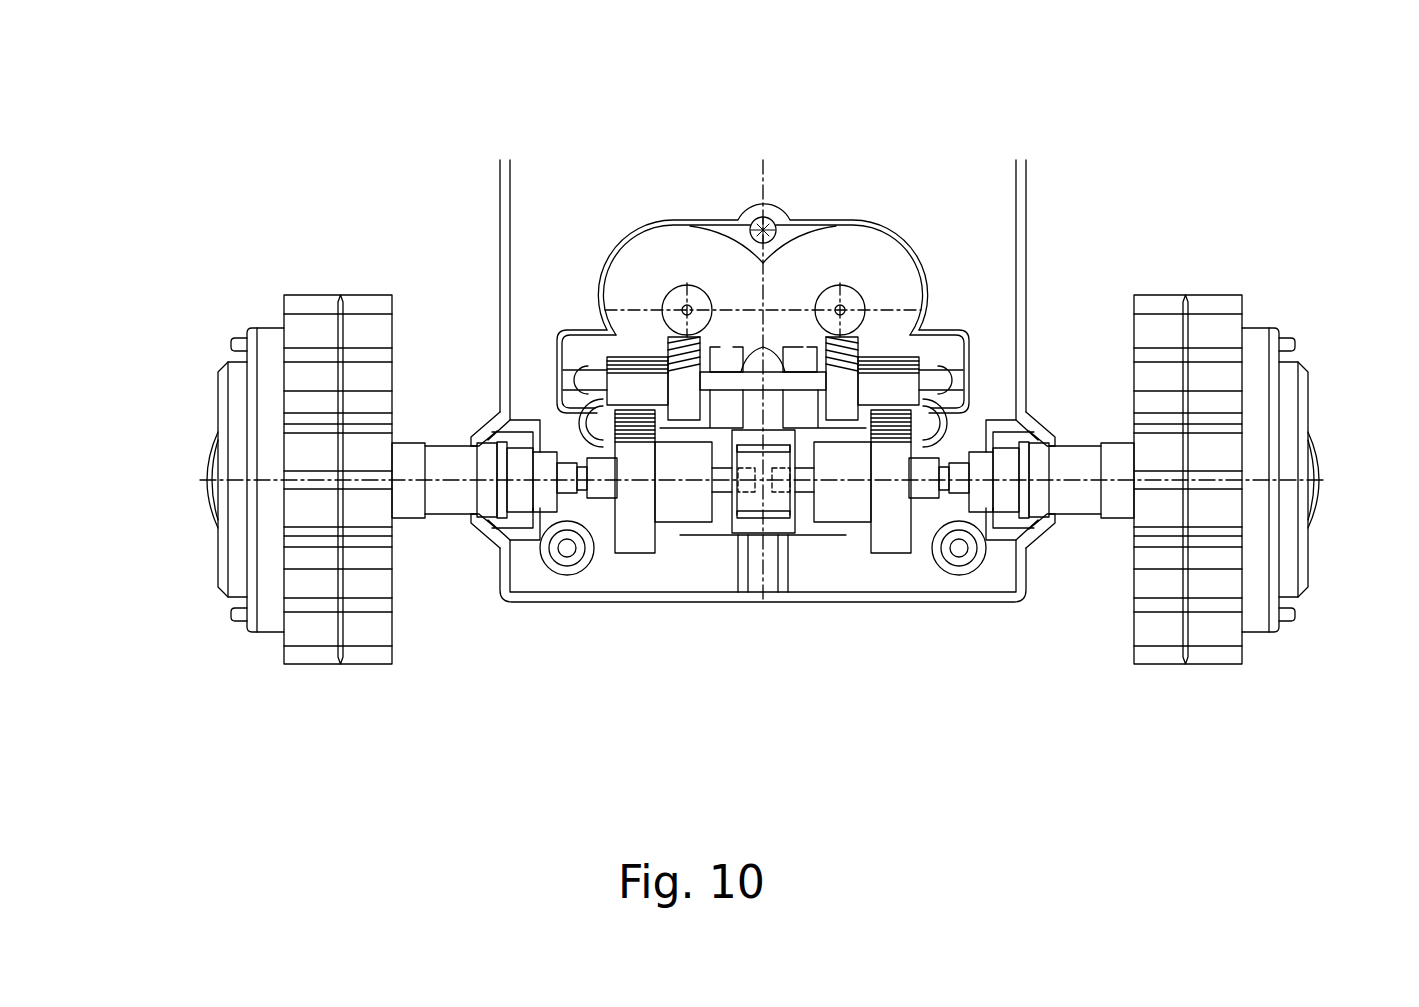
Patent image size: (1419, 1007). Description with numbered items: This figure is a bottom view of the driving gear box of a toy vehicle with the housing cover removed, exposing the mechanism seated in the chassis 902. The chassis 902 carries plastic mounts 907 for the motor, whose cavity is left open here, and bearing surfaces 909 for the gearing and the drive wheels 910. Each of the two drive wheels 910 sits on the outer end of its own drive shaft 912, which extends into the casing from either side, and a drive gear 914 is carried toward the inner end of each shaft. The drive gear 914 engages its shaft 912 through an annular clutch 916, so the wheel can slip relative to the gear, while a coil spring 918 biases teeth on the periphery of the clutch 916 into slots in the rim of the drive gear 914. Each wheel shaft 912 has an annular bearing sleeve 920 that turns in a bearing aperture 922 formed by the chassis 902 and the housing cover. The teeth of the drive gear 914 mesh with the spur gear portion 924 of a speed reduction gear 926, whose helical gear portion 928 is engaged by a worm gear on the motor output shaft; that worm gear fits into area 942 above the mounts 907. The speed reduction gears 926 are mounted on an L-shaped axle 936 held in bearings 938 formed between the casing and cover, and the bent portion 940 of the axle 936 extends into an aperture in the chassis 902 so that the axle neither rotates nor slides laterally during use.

The chassis 902 is at (730, 767).
The mounts 907 is at (852, 213).
The bearing surfaces 909 is at (712, 540).
The drive wheels 910 is at (293, 667).
The drive shaft 912 is at (947, 500).
The drive gear 914 is at (889, 557).
The annular clutch 916 is at (703, 497).
The coil spring 918 is at (573, 456).
The annular bearing sleeve 920 is at (500, 524).
The bearing aperture 922 is at (957, 446).
The spur gear portion 924 is at (632, 370).
The speed reduction gear 926 is at (382, 160).
The helical gear portion 928 is at (658, 333).
The axle 936 is at (957, 352).
The bearings 938 is at (782, 340).
The bent portion 940 is at (557, 369).
The area 942 is at (857, 280).